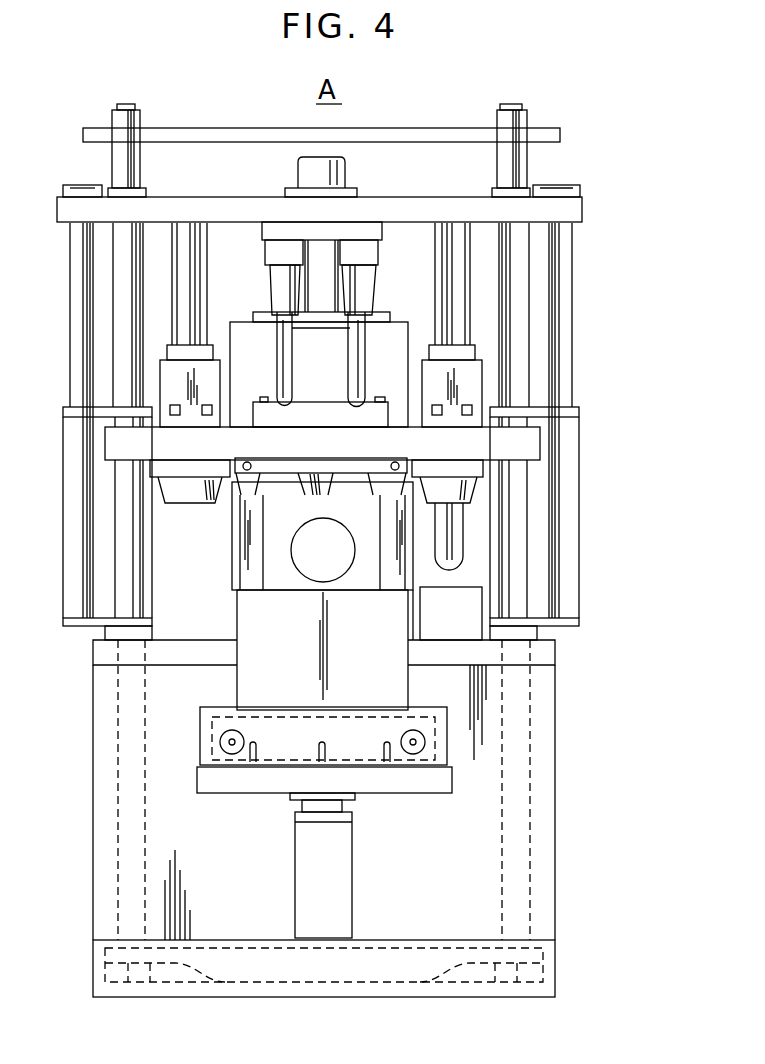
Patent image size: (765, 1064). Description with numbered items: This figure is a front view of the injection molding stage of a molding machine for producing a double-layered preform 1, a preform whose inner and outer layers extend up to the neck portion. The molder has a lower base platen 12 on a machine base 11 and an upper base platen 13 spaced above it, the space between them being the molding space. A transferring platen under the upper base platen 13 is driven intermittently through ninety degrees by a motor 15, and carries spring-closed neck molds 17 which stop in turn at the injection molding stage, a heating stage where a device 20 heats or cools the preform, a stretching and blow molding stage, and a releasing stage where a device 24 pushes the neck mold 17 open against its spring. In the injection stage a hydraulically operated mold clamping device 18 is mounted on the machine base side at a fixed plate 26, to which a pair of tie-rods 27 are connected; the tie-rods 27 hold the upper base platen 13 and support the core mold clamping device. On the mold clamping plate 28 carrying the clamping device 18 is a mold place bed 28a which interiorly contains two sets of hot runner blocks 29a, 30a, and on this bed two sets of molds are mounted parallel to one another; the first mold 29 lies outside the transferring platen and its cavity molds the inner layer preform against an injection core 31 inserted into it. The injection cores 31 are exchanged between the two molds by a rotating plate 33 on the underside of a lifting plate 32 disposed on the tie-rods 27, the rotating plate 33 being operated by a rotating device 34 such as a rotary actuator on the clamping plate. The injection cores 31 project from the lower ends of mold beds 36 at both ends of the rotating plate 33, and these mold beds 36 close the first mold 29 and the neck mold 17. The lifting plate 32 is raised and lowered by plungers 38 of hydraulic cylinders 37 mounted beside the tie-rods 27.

The double-layered preform 1 is at (447, 552).
The machine base 11 is at (108, 785).
The lower base platen 12 is at (103, 653).
The upper base platen 13 is at (118, 445).
The motor 15 is at (335, 348).
The neck mold 17 is at (252, 477).
The mold clamping device 18 is at (300, 862).
The heating/cooling device 20 is at (450, 297).
The neck mold pushing device 24 is at (193, 232).
The fixed plate 26 is at (280, 970).
The tie-rod 27 is at (512, 372).
The mold clamping plate 28 is at (403, 793).
The mold place bed 28a is at (205, 722).
The first mold 29 is at (255, 603).
The hot runner block 29a is at (272, 752).
The hot runner block 30a is at (440, 757).
The injection core 31 is at (283, 345).
The lifting plate 32 is at (243, 212).
The rotating plate 33 is at (372, 230).
The rotating device 34 is at (333, 178).
The mold bed 36 is at (282, 277).
The hydraulic cylinder 37 is at (120, 350).
The plunger 38 is at (80, 320).